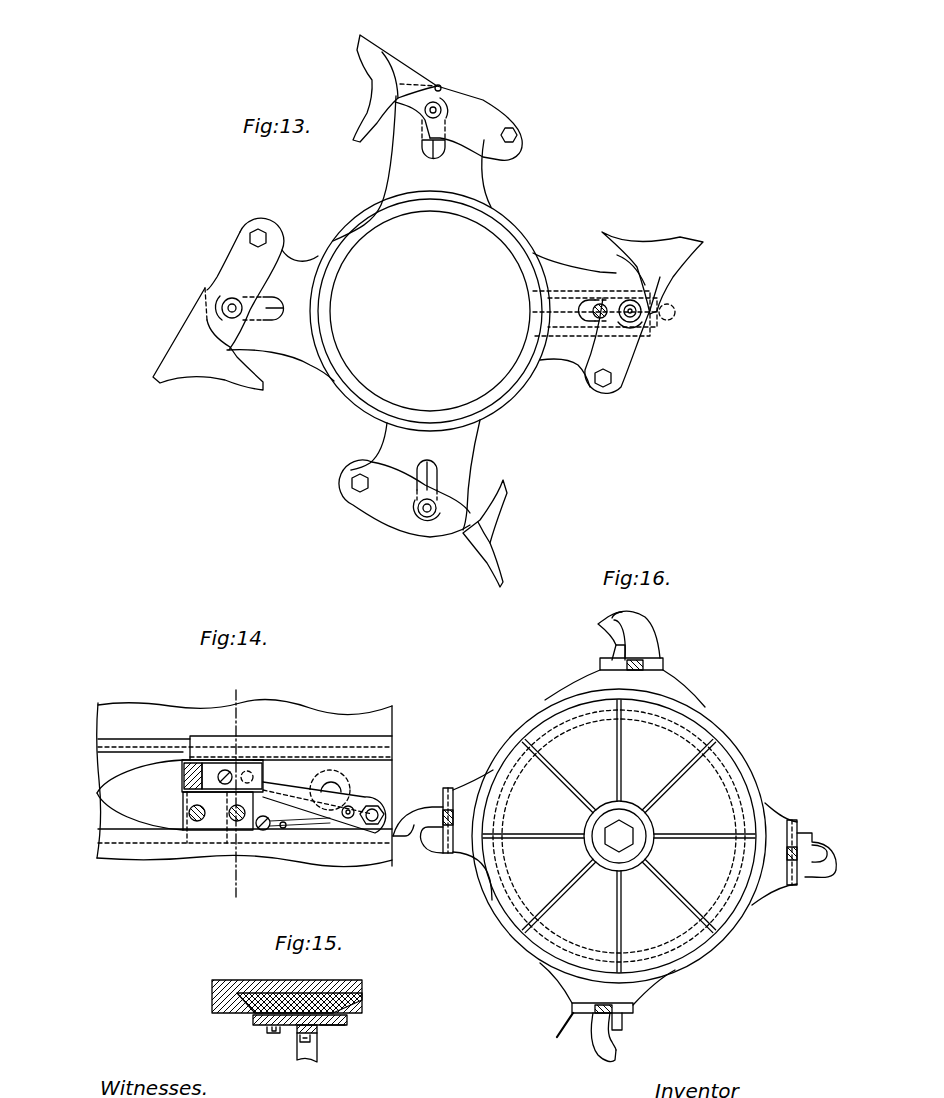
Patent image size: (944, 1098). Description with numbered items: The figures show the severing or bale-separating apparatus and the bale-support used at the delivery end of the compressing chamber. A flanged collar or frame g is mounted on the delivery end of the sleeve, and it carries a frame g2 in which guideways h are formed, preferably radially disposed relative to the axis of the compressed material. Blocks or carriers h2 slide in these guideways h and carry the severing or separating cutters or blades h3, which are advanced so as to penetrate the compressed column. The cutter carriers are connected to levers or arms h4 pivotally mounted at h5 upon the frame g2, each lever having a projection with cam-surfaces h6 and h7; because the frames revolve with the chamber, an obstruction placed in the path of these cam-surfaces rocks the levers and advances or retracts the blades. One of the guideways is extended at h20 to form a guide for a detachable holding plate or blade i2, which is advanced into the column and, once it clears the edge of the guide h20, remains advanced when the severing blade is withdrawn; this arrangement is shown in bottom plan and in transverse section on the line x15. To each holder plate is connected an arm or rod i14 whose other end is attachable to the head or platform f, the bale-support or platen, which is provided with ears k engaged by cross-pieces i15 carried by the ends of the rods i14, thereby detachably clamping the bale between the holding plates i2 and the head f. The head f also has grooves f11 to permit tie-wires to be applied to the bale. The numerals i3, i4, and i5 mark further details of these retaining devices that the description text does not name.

In FIG. 13, the flanged collar or frame g is at (362, 410).
In FIG. 13, the frame g2 is at (478, 410).
In FIG. 15, the frame g2 is at (235, 980).
In FIG. 14, the guideways h is at (131, 832).
In FIG. 15, the guideways h is at (362, 993).
In FIG. 14, the blocks or carriers h2 is at (207, 822).
In FIG. 15, the blocks or carriers h2 is at (250, 1020).
In FIG. 14, the severing or separating cutters or blades h3 is at (108, 800).
In FIG. 13, the levers or arms h4 is at (240, 265).
In FIG. 13, the pivot h5 is at (517, 137).
In FIG. 13, the cam-surface h6 is at (450, 592).
In FIG. 13, the cam-surface h7 is at (622, 250).
In FIG. 14, the extended guideway h20 is at (255, 760).
In FIG. 15, the extended guideway h20 is at (358, 1005).
In FIG. 14, the detachable plates or blades i2 is at (123, 777).
In FIG. 14, the lever i3 is at (283, 763).
In FIG. 15, the lever i3 is at (325, 1022).
In FIG. 14, the pivot pin i4 is at (352, 806).
In FIG. 16, the pin i5 is at (558, 1039).
In FIG. 14, the arm or rod i14 is at (418, 830).
In FIG. 15, the arm or rod i14 is at (300, 1062).
In FIG. 16, the arm or rod i14 is at (645, 633).
In FIG. 16, the cross-pieces i15 is at (665, 665).
In FIG. 16, the ears k is at (598, 624).
In FIG. 16, the head or platform f is at (712, 958).
In FIG. 16, the grooves f11 is at (578, 765).
In FIG. 14, the section line x15 is at (230, 790).